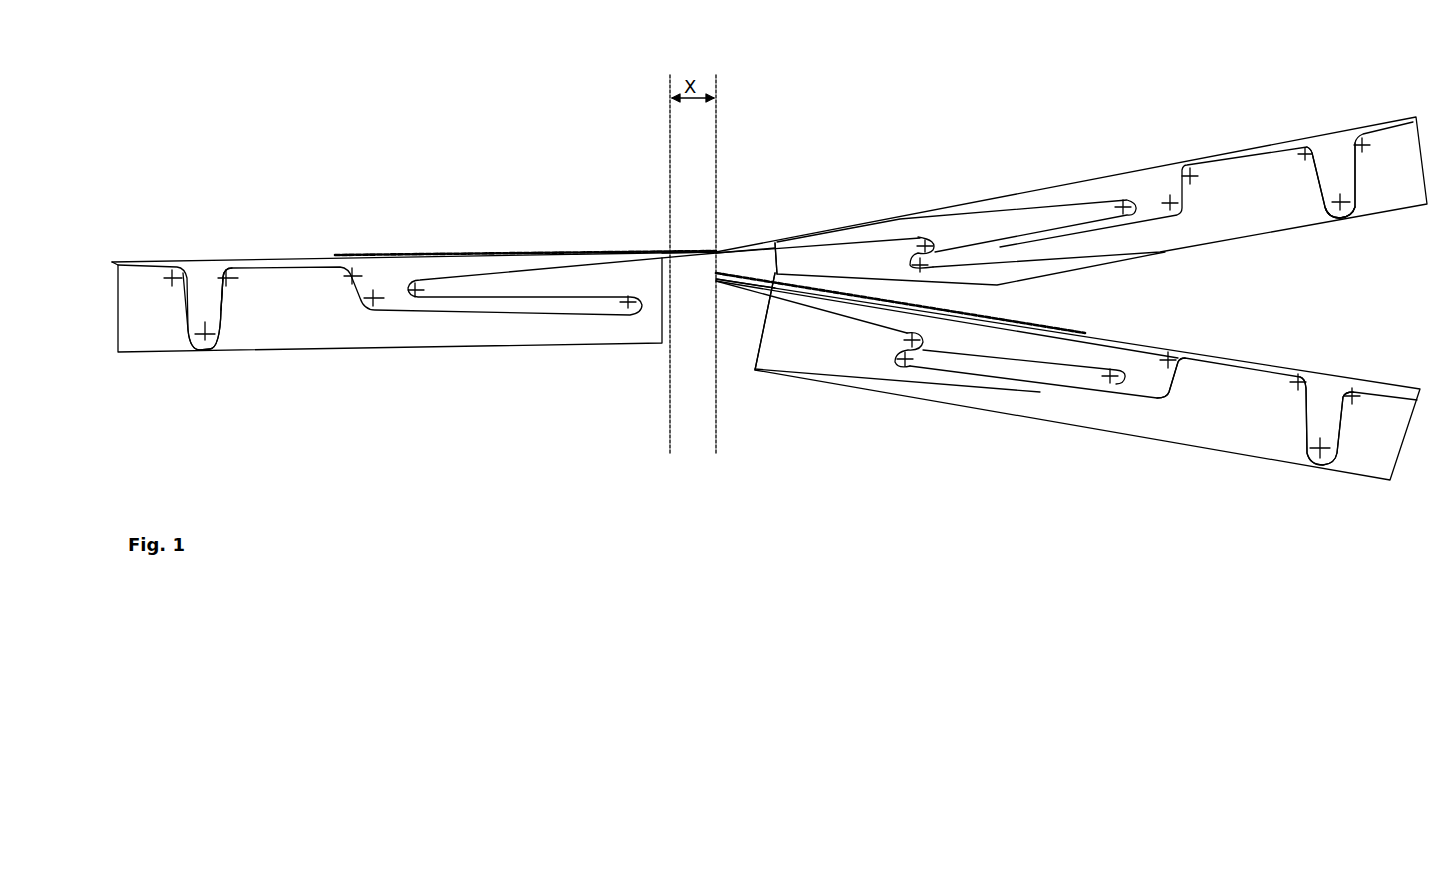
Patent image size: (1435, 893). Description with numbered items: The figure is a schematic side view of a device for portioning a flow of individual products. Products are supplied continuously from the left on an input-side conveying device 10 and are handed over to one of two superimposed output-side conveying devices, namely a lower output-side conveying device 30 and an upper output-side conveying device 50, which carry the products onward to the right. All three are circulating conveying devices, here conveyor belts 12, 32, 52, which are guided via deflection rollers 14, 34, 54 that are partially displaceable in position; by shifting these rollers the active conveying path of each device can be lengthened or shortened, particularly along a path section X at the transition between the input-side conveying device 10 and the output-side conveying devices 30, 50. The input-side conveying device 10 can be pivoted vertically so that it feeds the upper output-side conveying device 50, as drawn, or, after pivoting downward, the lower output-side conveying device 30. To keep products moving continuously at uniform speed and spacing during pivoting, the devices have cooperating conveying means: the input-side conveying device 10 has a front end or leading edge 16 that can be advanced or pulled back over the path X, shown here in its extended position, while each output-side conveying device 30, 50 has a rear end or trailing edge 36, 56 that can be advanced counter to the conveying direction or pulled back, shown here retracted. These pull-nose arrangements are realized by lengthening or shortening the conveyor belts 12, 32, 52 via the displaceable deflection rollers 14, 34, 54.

The input-side conveying device 10 is at (467, 360).
The conveyor belt 12 is at (220, 307).
The deflection roller 14 is at (232, 277).
The front end / leading edge 16 is at (690, 251).
The lower output-side conveying device 30 is at (1017, 432).
The conveyor belt 32 is at (1352, 397).
The deflection roller 34 is at (1183, 362).
The rear end / trailing edge 36 is at (738, 283).
The upper output-side conveying device 50 is at (1033, 168).
The conveyor belt 52 is at (1352, 157).
The deflection roller 54 is at (1352, 215).
The rear end / trailing edge 56 is at (736, 250).